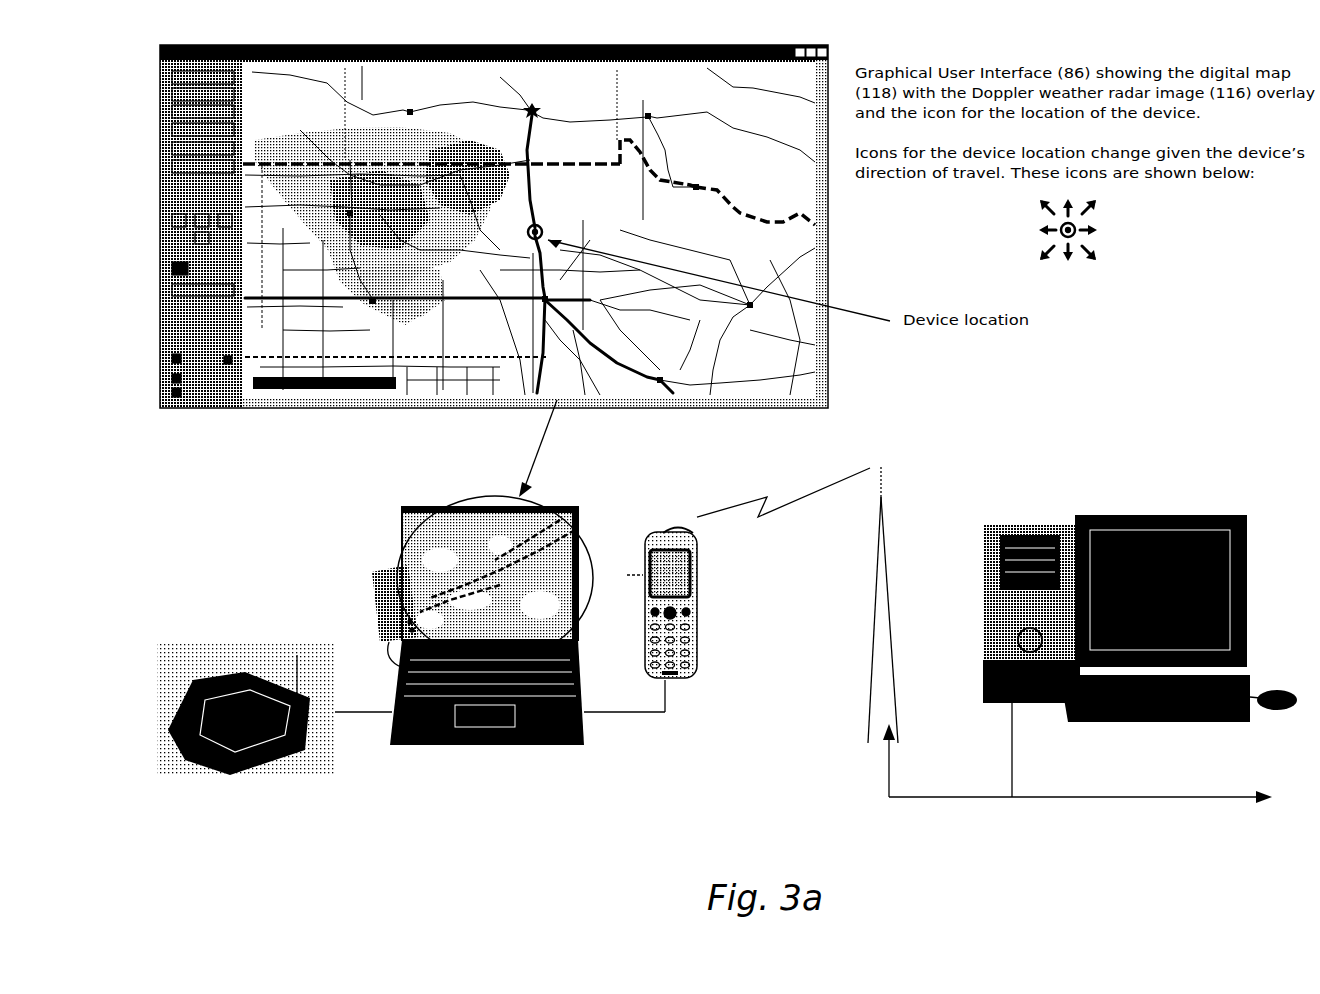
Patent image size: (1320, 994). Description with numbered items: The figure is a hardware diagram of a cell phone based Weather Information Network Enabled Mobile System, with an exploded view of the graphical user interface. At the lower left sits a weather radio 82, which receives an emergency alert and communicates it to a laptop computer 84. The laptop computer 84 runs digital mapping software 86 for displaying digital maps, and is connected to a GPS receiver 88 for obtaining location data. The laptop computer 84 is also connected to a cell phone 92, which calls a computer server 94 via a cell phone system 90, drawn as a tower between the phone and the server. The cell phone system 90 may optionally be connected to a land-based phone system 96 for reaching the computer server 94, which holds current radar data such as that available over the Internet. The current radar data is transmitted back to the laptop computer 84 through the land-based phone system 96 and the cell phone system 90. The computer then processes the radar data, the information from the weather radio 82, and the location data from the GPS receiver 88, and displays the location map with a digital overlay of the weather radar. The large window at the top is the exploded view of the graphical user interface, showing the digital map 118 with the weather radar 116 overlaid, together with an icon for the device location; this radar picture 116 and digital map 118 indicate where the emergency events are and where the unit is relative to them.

The weather radio 82 is at (252, 807).
The laptop computer 84 is at (500, 797).
The digital mapping software 86 is at (582, 500).
The GPS receiver 88 is at (353, 583).
The cell phone system 90 is at (955, 457).
The cell phone 92 is at (703, 718).
The computer server 94 is at (1168, 745).
The land-based phone system 96 is at (1075, 850).
The weather radar 116 is at (343, 398).
The digital map 118 is at (818, 365).